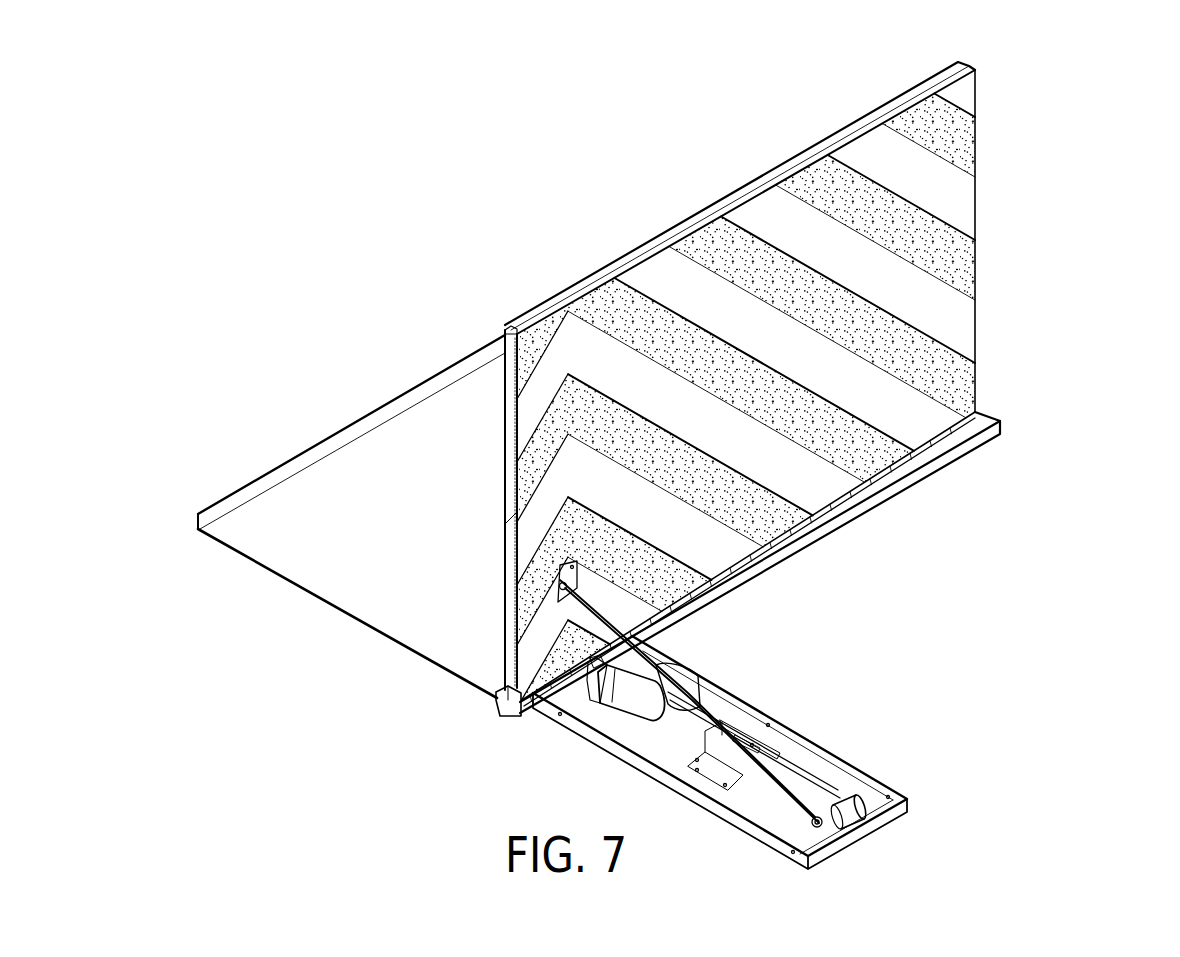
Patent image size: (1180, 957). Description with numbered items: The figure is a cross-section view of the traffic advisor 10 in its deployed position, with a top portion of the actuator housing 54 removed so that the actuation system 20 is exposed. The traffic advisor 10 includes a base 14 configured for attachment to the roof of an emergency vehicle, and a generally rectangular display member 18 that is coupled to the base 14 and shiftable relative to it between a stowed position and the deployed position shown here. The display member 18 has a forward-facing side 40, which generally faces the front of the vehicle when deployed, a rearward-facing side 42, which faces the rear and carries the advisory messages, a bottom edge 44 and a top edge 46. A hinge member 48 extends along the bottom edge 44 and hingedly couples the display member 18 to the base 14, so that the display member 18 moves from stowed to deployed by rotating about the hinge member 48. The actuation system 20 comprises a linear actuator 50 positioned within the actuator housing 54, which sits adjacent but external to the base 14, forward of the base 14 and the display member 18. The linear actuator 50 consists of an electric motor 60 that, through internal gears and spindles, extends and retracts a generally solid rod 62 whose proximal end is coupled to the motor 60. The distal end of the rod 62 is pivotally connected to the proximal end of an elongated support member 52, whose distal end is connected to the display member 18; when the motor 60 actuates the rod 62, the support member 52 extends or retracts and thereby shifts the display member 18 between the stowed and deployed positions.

The traffic advisor 10 is at (1112, 141).
The base 14 is at (284, 563).
The display member 18 is at (513, 488).
The actuation system 20 is at (855, 641).
The forward-facing side 40 is at (964, 262).
The rearward-facing side 42 is at (797, 155).
The bottom edge 44 is at (496, 694).
The top edge 46 is at (554, 304).
The hinge member 48 is at (512, 703).
The linear actuator 50 is at (760, 694).
The elongated support member 52 is at (768, 788).
The actuator housing 54 is at (861, 834).
The electric motor 60 is at (676, 662).
The solid rod 62 is at (800, 781).